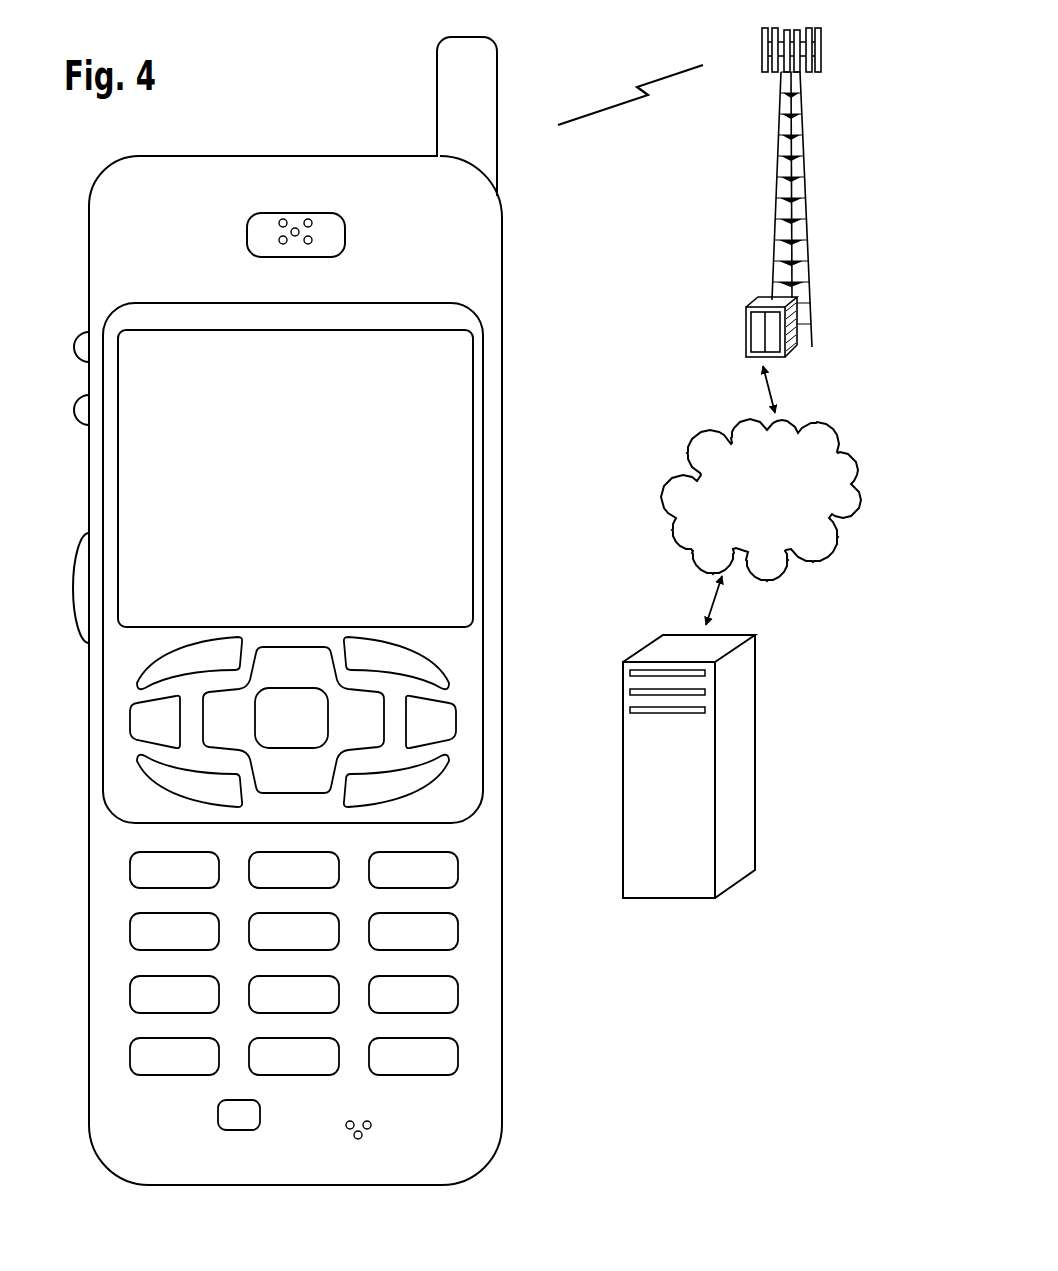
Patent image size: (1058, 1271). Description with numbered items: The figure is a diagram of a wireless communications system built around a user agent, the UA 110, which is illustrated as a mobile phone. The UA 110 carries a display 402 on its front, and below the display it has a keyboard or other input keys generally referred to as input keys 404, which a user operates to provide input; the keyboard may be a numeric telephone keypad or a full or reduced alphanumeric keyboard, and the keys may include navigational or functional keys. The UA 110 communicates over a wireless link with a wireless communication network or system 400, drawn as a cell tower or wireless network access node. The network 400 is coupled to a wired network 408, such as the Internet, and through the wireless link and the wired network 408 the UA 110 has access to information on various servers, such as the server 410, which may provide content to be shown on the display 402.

The UA 110 is at (324, 624).
The wireless communication network or system 400 is at (775, 207).
The display 402 is at (474, 342).
The input keys 404 is at (512, 636).
The wired network 408 is at (690, 553).
The server 410 is at (665, 899).